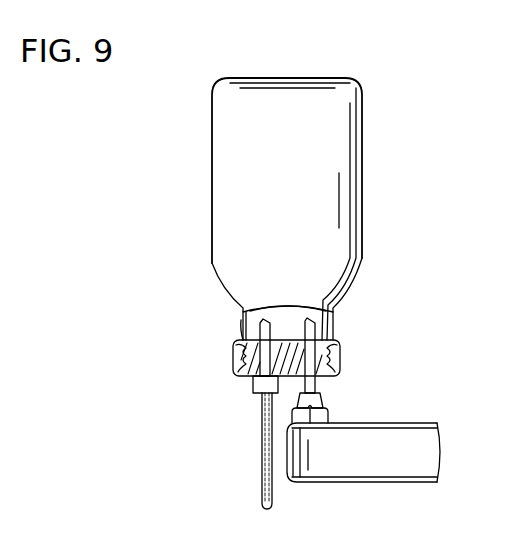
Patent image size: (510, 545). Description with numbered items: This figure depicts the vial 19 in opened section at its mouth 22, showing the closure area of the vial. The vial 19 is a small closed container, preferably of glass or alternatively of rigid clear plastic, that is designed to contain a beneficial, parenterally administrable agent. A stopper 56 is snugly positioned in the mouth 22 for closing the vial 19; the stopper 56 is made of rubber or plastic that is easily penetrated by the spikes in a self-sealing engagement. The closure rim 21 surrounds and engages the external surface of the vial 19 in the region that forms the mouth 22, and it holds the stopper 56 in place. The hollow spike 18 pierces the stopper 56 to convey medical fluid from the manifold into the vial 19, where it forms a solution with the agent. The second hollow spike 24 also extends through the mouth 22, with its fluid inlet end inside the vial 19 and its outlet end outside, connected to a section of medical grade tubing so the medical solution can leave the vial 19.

The vial 19 is at (362, 180).
The stopper 56 is at (292, 310).
The closure rim 21 is at (235, 358).
The spike 24 is at (238, 325).
The mouth 22 is at (250, 377).
The spike 18 is at (318, 378).